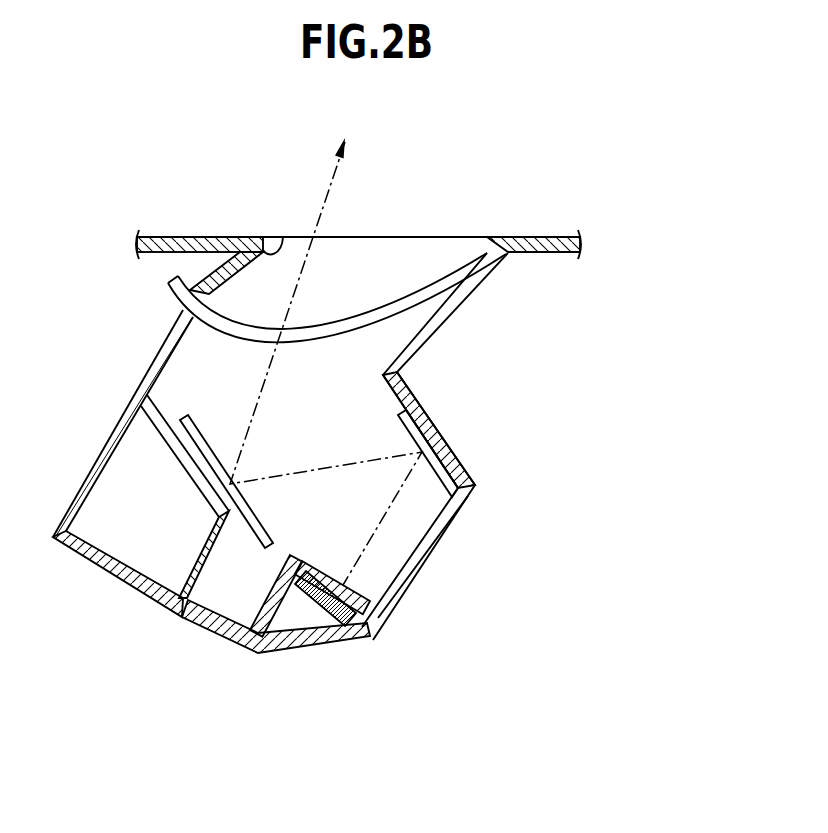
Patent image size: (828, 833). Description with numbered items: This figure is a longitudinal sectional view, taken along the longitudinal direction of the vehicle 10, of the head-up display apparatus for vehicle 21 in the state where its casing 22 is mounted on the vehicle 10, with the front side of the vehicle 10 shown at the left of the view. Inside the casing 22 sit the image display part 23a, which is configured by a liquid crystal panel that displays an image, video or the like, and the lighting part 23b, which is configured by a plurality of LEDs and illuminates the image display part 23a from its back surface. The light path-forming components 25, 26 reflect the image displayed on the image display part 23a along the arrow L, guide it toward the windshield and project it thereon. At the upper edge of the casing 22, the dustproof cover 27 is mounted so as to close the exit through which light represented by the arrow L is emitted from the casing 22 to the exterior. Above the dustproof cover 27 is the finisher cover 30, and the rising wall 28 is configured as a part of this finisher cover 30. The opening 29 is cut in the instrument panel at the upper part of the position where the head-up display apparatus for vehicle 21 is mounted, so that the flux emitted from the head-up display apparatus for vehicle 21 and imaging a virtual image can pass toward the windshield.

The vehicle 10 is at (334, 405).
The head-up display apparatus for vehicle 21 is at (496, 204).
The casing 22 is at (397, 378).
The image display part 23a is at (360, 597).
The lighting part 23b is at (327, 618).
The light path-forming component 25 is at (450, 448).
The light path-forming component 26 is at (266, 546).
The dustproof cover 27 is at (401, 298).
The rising wall 28 is at (212, 272).
The opening 29 is at (284, 238).
The finisher cover 30 is at (160, 238).